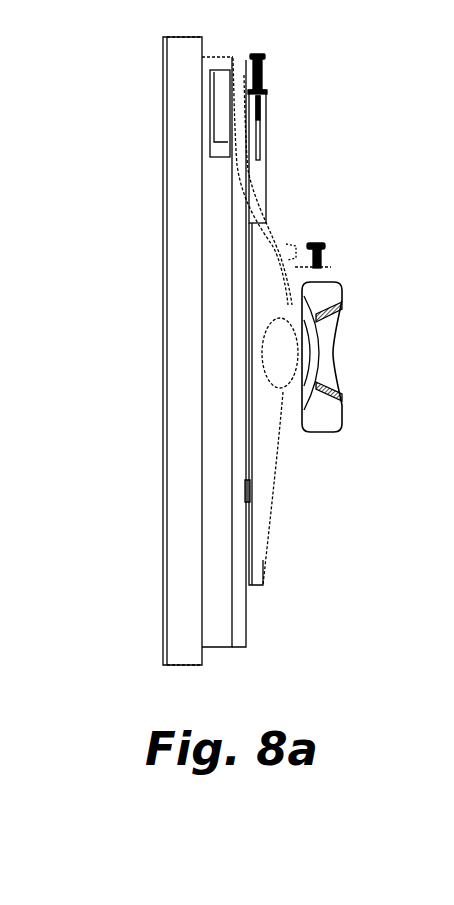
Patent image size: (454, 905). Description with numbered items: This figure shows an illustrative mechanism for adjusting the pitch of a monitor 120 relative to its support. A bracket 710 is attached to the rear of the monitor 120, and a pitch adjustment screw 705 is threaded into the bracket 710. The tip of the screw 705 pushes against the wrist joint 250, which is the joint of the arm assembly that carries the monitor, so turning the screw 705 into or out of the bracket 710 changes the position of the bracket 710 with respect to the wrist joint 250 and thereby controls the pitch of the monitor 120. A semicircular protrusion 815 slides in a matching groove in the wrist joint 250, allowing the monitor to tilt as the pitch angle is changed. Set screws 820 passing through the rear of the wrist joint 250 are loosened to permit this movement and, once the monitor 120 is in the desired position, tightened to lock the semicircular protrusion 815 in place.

The monitor 120 is at (137, 122).
The bracket 710 is at (283, 240).
The screw 705 is at (322, 258).
The wrist joint 250 is at (368, 394).
The semicircular protrusion 815 is at (340, 354).
The set screws 820 is at (345, 312).